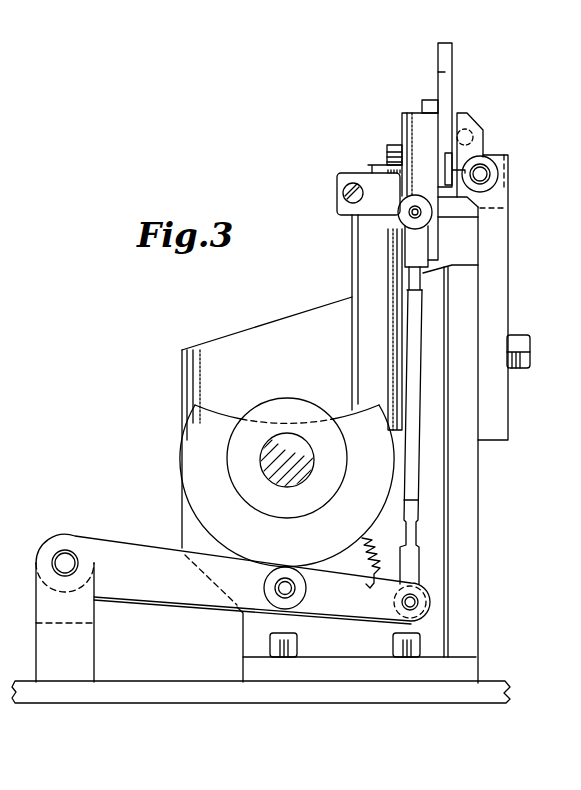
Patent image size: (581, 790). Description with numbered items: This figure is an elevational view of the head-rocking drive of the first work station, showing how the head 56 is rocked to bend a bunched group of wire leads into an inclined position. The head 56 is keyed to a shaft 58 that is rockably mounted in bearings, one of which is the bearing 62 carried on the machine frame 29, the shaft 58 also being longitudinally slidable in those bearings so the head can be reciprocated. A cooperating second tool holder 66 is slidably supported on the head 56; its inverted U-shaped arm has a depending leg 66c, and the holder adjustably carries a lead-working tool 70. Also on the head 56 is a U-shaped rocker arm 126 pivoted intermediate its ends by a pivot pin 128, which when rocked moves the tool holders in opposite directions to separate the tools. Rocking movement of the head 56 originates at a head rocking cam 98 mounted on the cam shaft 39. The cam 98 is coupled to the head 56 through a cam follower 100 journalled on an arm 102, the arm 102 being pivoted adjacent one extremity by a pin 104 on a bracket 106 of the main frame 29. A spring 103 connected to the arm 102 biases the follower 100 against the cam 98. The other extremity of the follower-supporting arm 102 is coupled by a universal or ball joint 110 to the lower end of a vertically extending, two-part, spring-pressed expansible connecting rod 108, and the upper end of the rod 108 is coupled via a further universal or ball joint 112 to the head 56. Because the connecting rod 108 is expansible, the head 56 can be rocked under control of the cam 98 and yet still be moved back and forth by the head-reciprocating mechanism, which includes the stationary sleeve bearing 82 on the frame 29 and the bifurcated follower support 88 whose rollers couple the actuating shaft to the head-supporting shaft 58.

The frame 29 is at (470, 548).
The cam shaft 39 is at (282, 442).
The head 56 is at (415, 128).
The shaft 58 is at (483, 172).
The bearing 62 is at (510, 170).
The second tool holder 66 is at (452, 62).
The depending leg 66c is at (453, 98).
The lead-working tool 70 is at (462, 196).
The stationary sleeve bearing 82 is at (361, 367).
The bifurcated follower support 88 is at (352, 173).
The head rocking cam 98 is at (190, 458).
The cam follower 100 is at (297, 598).
The arm 102 is at (140, 553).
The spring 103 is at (363, 548).
The pin 104 is at (65, 556).
The bracket 106 is at (87, 645).
The expansible connecting rod 108 is at (423, 400).
The ball joint 110 is at (430, 602).
The ball joint 112 is at (411, 244).
The rocker arm 126 is at (428, 100).
The pivot pin 128 is at (389, 150).